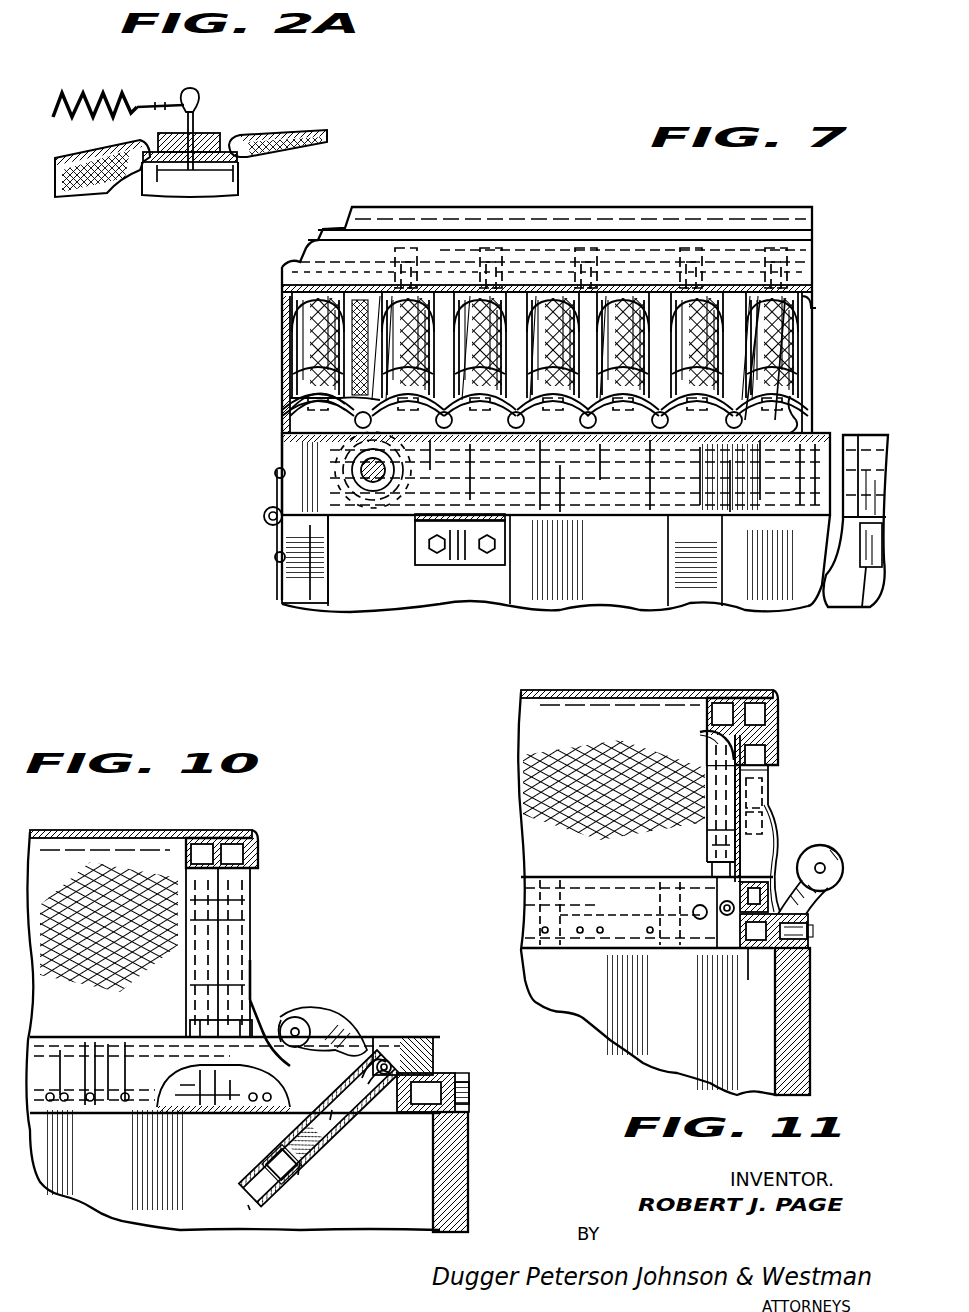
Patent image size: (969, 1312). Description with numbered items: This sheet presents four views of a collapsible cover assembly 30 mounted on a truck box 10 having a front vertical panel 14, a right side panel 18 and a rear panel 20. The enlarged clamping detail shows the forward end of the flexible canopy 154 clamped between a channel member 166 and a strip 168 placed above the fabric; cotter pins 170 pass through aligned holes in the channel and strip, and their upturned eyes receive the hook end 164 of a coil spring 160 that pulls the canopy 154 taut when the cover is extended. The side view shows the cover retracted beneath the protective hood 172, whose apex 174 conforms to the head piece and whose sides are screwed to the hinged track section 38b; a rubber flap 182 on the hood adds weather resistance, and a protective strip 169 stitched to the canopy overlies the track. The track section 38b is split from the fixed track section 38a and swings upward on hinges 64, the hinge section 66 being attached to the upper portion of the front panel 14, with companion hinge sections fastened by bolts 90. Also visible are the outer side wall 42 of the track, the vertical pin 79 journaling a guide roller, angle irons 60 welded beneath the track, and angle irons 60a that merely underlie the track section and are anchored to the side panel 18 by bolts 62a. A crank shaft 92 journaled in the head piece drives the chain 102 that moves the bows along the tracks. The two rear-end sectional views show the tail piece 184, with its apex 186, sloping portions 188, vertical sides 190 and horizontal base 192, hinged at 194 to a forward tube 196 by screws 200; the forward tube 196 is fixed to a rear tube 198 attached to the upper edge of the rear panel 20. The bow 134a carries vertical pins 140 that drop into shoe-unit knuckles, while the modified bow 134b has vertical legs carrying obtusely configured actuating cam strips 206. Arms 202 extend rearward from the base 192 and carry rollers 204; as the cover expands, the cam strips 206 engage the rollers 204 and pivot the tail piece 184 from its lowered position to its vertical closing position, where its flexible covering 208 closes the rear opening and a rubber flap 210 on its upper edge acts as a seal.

In FIG. 7, the truck box 10 is at (440, 612).
In FIG. 7, the front vertical panel 14 is at (300, 596).
In FIG. 7, the right side panel 18 is at (545, 606).
In FIG. 10, the right side panel 18 is at (88, 1210).
In FIG. 10, the rear panel 20 is at (450, 1192).
In FIG. 11, the rear panel 20 is at (803, 1060).
In FIG. 7, the collapsible cover assembly 30 is at (826, 320).
In FIG. 7, the fixed track section 38a is at (874, 440).
In FIG. 7, the hinged track section 38b is at (792, 402).
In FIG. 7, the outer side wall 42 is at (595, 512).
In FIG. 7, the angle irons 60 is at (862, 607).
In FIG. 7, the additional angle irons 60a is at (420, 548).
In FIG. 7, the bolts 62a is at (488, 553).
In FIG. 7, the hinges 64 is at (262, 517).
In FIG. 7, the hinge section 66 is at (276, 478).
In FIG. 7, the vertical pin 79 is at (283, 398).
In FIG. 7, the bolts 90 is at (276, 558).
In FIG. 7, the crank shaft 92 is at (372, 480).
In FIG. 11, the roller-type chain 102 is at (565, 928).
In FIG. 10, the bow 134a is at (186, 868).
In FIG. 10, the second bow 134b is at (252, 902).
In FIG. 10, the vertical pins 140 is at (190, 1027).
In FIG. 2A, the flexible canopy 154 is at (302, 129).
In FIG. 7, the flexible canopy 154 is at (555, 300).
In FIG. 2A, the coil spring 160 is at (74, 96).
In FIG. 2A, the hook end 164 is at (161, 102).
In FIG. 2A, the channel member 166 is at (120, 185).
In FIG. 2A, the strip 168 is at (214, 134).
In FIG. 7, the protective strip 169 is at (790, 385).
In FIG. 2A, the cotter pins 170 is at (197, 94).
In FIG. 7, the protective hood 172 is at (280, 300).
In FIG. 7, the peak or apex 174 is at (515, 212).
In FIG. 7, the rubber flap 182 is at (814, 298).
In FIG. 10, the tail piece 184 is at (254, 1143).
In FIG. 11, the tail piece 184 is at (782, 758).
In FIG. 10, the peak or apex 186 is at (262, 1182).
In FIG. 11, the peak or apex 186 is at (777, 735).
In FIG. 10, the sloping portions 188 is at (300, 1170).
In FIG. 11, the sloping portions 188 is at (768, 794).
In FIG. 10, the vertical sides 190 is at (328, 1105).
In FIG. 11, the vertical sides 190 is at (760, 838).
In FIG. 10, the horizontal base 192 is at (376, 1042).
In FIG. 10, the hinge 194 is at (400, 1040).
In FIG. 10, the forward tube 196 is at (425, 1050).
In FIG. 11, the forward tube 196 is at (733, 916).
In FIG. 10, the rear tube 198 is at (462, 1082).
In FIG. 11, the rear tube 198 is at (813, 918).
In FIG. 10, the screws 200 is at (472, 1095).
In FIG. 11, the screws 200 is at (815, 932).
In FIG. 10, the arms 202 is at (310, 1028).
In FIG. 11, the arms 202 is at (806, 900).
In FIG. 10, the rollers 204 is at (286, 1016).
In FIG. 11, the rollers 204 is at (832, 852).
In FIG. 10, the actuating cams or strips 206 is at (256, 1010).
In FIG. 10, the flexible covering 208 is at (325, 1125).
In FIG. 11, the flexible covering 208 is at (710, 813).
In FIG. 10, the rubber strip or flap 210 is at (250, 1208).
In FIG. 11, the rubber strip or flap 210 is at (705, 733).